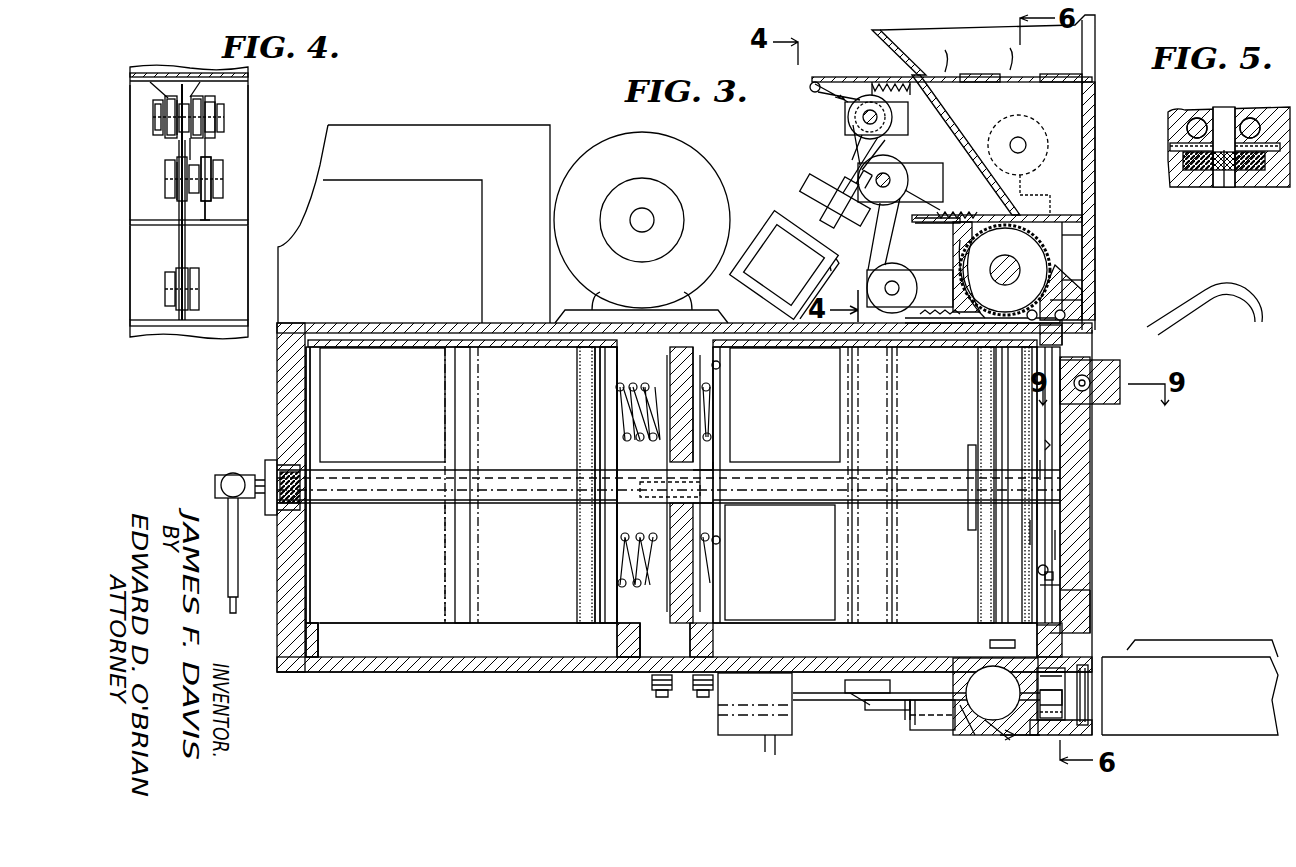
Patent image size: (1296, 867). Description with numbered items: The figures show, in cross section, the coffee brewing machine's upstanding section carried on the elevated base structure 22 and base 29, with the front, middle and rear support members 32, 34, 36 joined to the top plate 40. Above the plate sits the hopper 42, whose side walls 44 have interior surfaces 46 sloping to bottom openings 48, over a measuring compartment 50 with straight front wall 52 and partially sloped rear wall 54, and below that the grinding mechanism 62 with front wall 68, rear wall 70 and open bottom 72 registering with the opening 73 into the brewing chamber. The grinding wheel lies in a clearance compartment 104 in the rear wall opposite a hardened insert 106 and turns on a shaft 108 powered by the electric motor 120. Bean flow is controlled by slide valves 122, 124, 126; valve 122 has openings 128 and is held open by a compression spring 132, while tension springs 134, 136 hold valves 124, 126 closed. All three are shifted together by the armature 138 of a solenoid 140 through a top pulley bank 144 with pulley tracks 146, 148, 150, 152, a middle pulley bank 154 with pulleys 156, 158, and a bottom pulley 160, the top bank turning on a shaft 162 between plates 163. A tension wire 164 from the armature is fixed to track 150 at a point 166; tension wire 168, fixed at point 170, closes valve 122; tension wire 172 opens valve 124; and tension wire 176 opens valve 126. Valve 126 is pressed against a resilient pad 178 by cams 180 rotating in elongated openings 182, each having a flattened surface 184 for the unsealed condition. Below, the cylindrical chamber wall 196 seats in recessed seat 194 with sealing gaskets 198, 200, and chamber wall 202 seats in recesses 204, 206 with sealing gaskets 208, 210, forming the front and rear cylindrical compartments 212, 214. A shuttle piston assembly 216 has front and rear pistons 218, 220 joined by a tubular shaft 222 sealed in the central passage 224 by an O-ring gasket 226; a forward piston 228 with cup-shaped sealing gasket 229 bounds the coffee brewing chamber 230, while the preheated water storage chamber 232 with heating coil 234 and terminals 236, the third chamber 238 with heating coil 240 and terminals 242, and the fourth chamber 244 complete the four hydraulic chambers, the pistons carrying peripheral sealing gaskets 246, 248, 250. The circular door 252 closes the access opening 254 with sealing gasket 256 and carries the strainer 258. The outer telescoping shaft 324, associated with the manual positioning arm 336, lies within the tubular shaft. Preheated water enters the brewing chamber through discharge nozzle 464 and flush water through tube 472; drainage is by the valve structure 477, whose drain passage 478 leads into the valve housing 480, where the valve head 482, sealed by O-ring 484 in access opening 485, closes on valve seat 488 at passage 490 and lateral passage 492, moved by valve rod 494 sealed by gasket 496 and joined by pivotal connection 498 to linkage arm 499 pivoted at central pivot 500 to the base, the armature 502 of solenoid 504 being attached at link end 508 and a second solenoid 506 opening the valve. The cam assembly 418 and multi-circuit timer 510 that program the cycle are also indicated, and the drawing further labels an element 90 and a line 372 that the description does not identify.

In FIG. 3, the elevated base structure 22 is at (1178, 668).
In FIG. 3, the base 29 is at (600, 655).
In FIG. 3, the front upstanding support member 32 is at (1090, 605).
In FIG. 3, the middle upstanding support member 34 is at (693, 416).
In FIG. 3, the rear upstanding support member 36 is at (306, 400).
In FIG. 5, the top plate 40 is at (1180, 180).
In FIG. 3, the hopper 42 is at (1101, 48).
In FIG. 3, the side walls 44 is at (870, 32).
In FIG. 3, the interior surfaces 46 is at (1095, 22).
In FIG. 3, the bottom openings 48 is at (962, 51).
In FIG. 3, the measuring compartment 50 is at (1100, 147).
In FIG. 3, the straight front wall 52 is at (1095, 101).
In FIG. 3, the partially sloped rear wall 54 is at (925, 135).
In FIG. 4, the partially sloped rear wall 54 is at (142, 170).
In FIG. 3, the coffee bean grinding mechanism 62 is at (1102, 271).
In FIG. 3, the front wall 68 is at (1082, 245).
In FIG. 3, the rear wall 70 is at (953, 232).
In FIG. 4, the rear wall 70 is at (142, 270).
In FIG. 3, the open bottom 72 is at (1082, 305).
In FIG. 3, the opening 73 is at (1062, 335).
In FIG. 5, the opening 73 is at (1218, 170).
In FIG. 3, the guide 90 is at (1062, 205).
In FIG. 3, the clearance compartment 104 is at (968, 250).
In FIG. 3, the hardened flat faced insert 106 is at (1082, 285).
In FIG. 3, the shaft 108 is at (1020, 258).
In FIG. 3, the electric motor 120 is at (613, 140).
In FIG. 3, the slide valve 122 is at (985, 82).
In FIG. 4, the slide valve 122 is at (250, 79).
In FIG. 3, the slide valve 124 is at (1095, 222).
In FIG. 4, the slide valve 124 is at (158, 326).
In FIG. 3, the third slide valve 126 is at (975, 345).
In FIG. 4, the third slide valve 126 is at (172, 225).
In FIG. 5, the third slide valve 126 is at (1226, 150).
In FIG. 3, the openings 128 is at (950, 82).
In FIG. 3, the compression spring 132 is at (883, 77).
In FIG. 3, the tension spring 134 is at (942, 210).
In FIG. 3, the tension spring 136 is at (935, 345).
In FIG. 3, the armature 138 is at (828, 177).
In FIG. 3, the solenoid 140 is at (786, 267).
In FIG. 4, the top pulley bank 144 is at (238, 121).
In FIG. 4, the pulley track 146 is at (155, 105).
In FIG. 4, the pulley track 148 is at (168, 112).
In FIG. 4, the pulley track 150 is at (195, 97).
In FIG. 4, the pulley track 152 is at (207, 130).
In FIG. 4, the middle pulley bank 154 is at (238, 182).
In FIG. 4, the pulley 156 is at (180, 200).
In FIG. 4, the pulley 158 is at (212, 200).
In FIG. 4, the bottom pulley 160 is at (196, 277).
In FIG. 3, the shaft 162 is at (870, 117).
In FIG. 3, the plates 163 is at (815, 92).
In FIG. 3, the tension wire 164 is at (860, 150).
In FIG. 4, the tension wire 164 is at (205, 147).
In FIG. 4, the fixing point 166 is at (200, 105).
In FIG. 4, the tension wire 168 is at (166, 97).
In FIG. 4, the fixing point 170 is at (177, 118).
In FIG. 4, the tension wire 172 is at (208, 212).
In FIG. 4, the tension wire 176 is at (186, 247).
In FIG. 5, the resilient pad 178 is at (1183, 160).
In FIG. 5, the cams 180 is at (1197, 118).
In FIG. 5, the elongated openings 182 is at (1170, 146).
In FIG. 5, the flattened surface 184 is at (1218, 140).
In FIG. 3, the recessed seat 194 is at (780, 562).
In FIG. 3, the cylindrical chamber wall 196 is at (900, 623).
In FIG. 3, the sealing gasket 198 is at (720, 575).
In FIG. 3, the sealing gasket 200 is at (1035, 445).
In FIG. 3, the chamber wall 202 is at (448, 628).
In FIG. 3, the recess 204 is at (318, 640).
In FIG. 3, the recess 206 is at (617, 633).
In FIG. 3, the sealing gasket 208 is at (310, 552).
In FIG. 3, the sealing gasket 210 is at (600, 598).
In FIG. 3, the front cylindrical compartment 212 is at (785, 405).
In FIG. 3, the rear cylindrical compartment 214 is at (439, 405).
In FIG. 3, the shuttle piston assembly 216 is at (948, 448).
In FIG. 3, the front piston 218 is at (978, 551).
In FIG. 3, the rear piston 220 is at (605, 523).
In FIG. 3, the tubular shaft 222 is at (738, 505).
In FIG. 3, the central passage 224 is at (705, 465).
In FIG. 3, the O-ring gasket 226 is at (718, 540).
In FIG. 3, the forward piston 228 is at (1030, 535).
In FIG. 3, the cup-shaped sealing gasket 229 is at (1037, 510).
In FIG. 3, the coffee brewing chamber 230 is at (1040, 470).
In FIG. 3, the preheated water storage chamber 232 is at (805, 625).
In FIG. 3, the electric heating coil 234 is at (716, 398).
In FIG. 3, the external terminals 236 is at (703, 698).
In FIG. 3, the third chamber 238 is at (577, 570).
In FIG. 3, the electric heating coil 240 is at (620, 400).
In FIG. 3, the external terminals 242 is at (660, 698).
In FIG. 3, the fourth chamber 244 is at (505, 608).
In FIG. 3, the peripheral sealing gasket 246 is at (1055, 545).
In FIG. 3, the peripheral sealing gasket 248 is at (1022, 576).
In FIG. 3, the peripheral sealing gasket 250 is at (595, 546).
In FIG. 3, the circular door 252 is at (1078, 435).
In FIG. 3, the access opening 254 is at (1060, 585).
In FIG. 3, the peripheral sealing gasket 256 is at (1053, 572).
In FIG. 3, the strainer 258 is at (1048, 445).
In FIG. 3, the outer telescoping shaft 324 is at (392, 463).
In FIG. 3, the positioning arm 336 is at (234, 473).
In FIG. 3, the line 372 is at (445, 557).
In FIG. 3, the cam assembly 418 is at (438, 93).
In FIG. 3, the discharge nozzle 464 is at (1050, 598).
In FIG. 3, the tube 472 is at (1040, 575).
In FIG. 3, the valve structure 477 is at (1010, 740).
In FIG. 3, the drain passage 478 is at (1055, 640).
In FIG. 3, the valve housing 480 is at (1000, 735).
In FIG. 3, the valve head 482 is at (1050, 697).
In FIG. 3, the O-ring 484 is at (1066, 685).
In FIG. 3, the access opening 485 is at (1083, 720).
In FIG. 3, the valve seat 488 is at (1022, 683).
In FIG. 3, the passage 490 is at (1010, 735).
In FIG. 3, the lateral passage 492 is at (968, 735).
In FIG. 3, the valve rod 494 is at (990, 644).
In FIG. 3, the gasket 496 is at (940, 735).
In FIG. 3, the pivotal connection 498 is at (850, 686).
In FIG. 3, the linkage arm 499 is at (870, 705).
In FIG. 3, the central pivot 500 is at (875, 690).
In FIG. 3, the armature 502 is at (905, 720).
In FIG. 3, the solenoid 504 is at (912, 730).
In FIG. 3, the second solenoid 506 is at (718, 735).
In FIG. 3, the link end 508 is at (885, 710).
In FIG. 3, the multi-circuit timer 510 is at (428, 150).